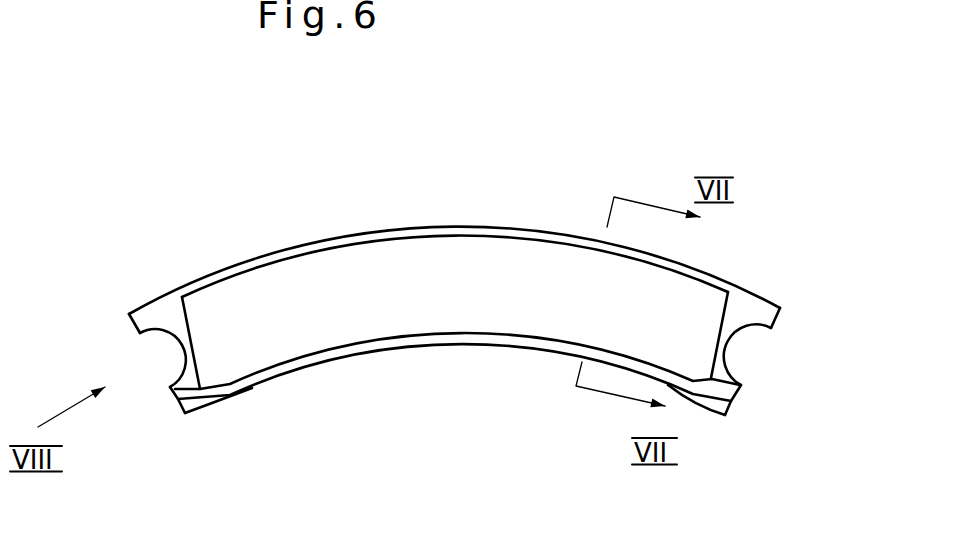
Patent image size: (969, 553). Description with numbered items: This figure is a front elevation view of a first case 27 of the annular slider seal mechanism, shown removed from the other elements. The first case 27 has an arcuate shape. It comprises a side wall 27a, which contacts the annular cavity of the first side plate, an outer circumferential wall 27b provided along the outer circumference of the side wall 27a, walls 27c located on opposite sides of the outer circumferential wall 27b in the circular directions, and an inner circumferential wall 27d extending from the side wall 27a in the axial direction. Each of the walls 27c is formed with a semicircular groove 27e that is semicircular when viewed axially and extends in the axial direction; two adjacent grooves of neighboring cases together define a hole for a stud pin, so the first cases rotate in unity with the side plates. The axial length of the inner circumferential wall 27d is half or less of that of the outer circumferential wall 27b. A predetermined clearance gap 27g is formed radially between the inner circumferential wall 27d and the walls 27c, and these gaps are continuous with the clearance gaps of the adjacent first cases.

The first case 27 is at (623, 142).
The side wall 27a is at (405, 290).
The outer circumferential wall 27b is at (507, 230).
The walls 27c is at (155, 318).
The inner circumferential wall 27d is at (432, 338).
The semicircular grooves 27e is at (175, 345).
The clearance gap 27g is at (233, 394).